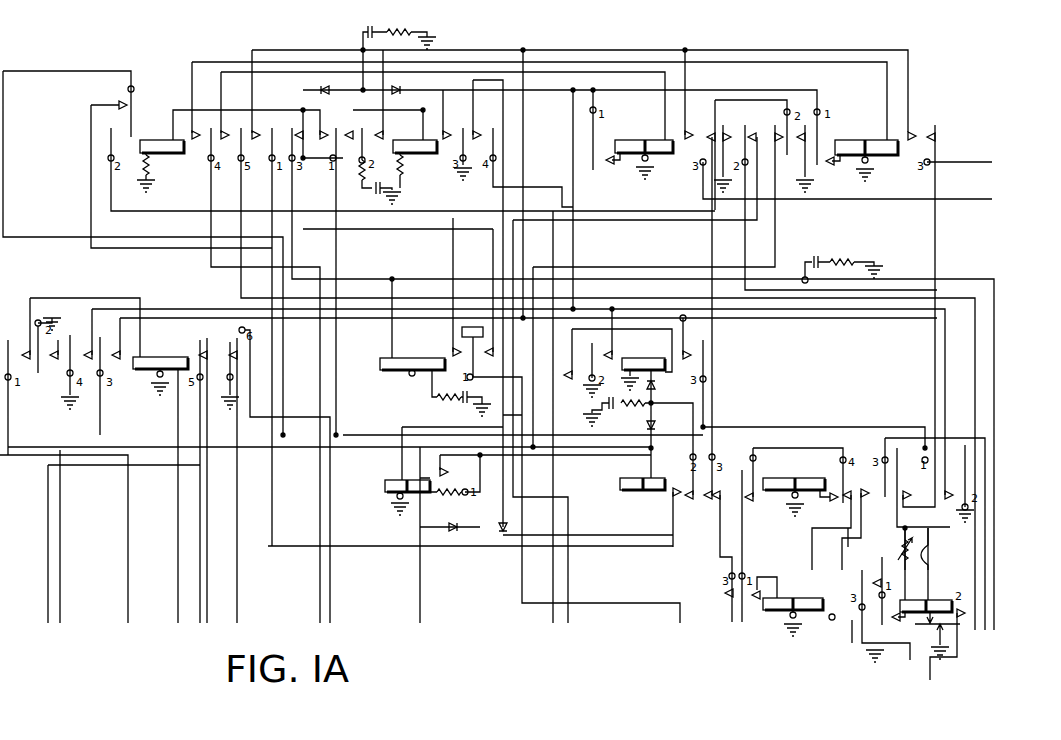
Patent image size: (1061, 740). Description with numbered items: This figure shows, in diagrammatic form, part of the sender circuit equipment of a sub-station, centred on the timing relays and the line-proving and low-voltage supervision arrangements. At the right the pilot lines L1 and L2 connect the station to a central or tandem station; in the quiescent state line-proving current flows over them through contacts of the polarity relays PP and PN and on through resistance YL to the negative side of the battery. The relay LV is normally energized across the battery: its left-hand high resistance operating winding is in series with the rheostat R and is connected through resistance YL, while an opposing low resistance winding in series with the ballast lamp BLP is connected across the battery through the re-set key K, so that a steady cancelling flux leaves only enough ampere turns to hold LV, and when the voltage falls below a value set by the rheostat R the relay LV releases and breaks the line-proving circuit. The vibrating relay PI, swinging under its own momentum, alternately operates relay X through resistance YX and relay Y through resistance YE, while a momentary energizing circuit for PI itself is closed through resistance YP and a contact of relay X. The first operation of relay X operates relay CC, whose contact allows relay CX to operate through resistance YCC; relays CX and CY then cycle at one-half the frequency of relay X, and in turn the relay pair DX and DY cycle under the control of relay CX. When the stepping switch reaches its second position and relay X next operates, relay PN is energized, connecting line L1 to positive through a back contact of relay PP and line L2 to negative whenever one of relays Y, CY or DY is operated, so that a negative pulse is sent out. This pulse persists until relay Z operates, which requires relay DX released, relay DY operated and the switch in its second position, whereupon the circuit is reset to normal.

The relay X is at (162, 135).
The resistance YX is at (151, 172).
The relay Y is at (415, 135).
The resistance YL is at (353, 170).
The resistance YE is at (392, 167).
The relay PN is at (639, 147).
The relay PP is at (862, 148).
The pilot line L1 is at (982, 155).
The pilot line L2 is at (982, 192).
The relay Z is at (160, 364).
The relay PI is at (412, 354).
The resistance YP is at (461, 393).
The relay CY is at (643, 352).
The relay CC is at (407, 485).
The resistance YCC is at (446, 487).
The relay CX is at (642, 472).
The relay DY is at (800, 485).
The relay DX is at (793, 605).
The rheostat R is at (901, 549).
The ballast lamp BLP is at (936, 549).
The relay LV is at (922, 598).
The re-set key K is at (937, 635).